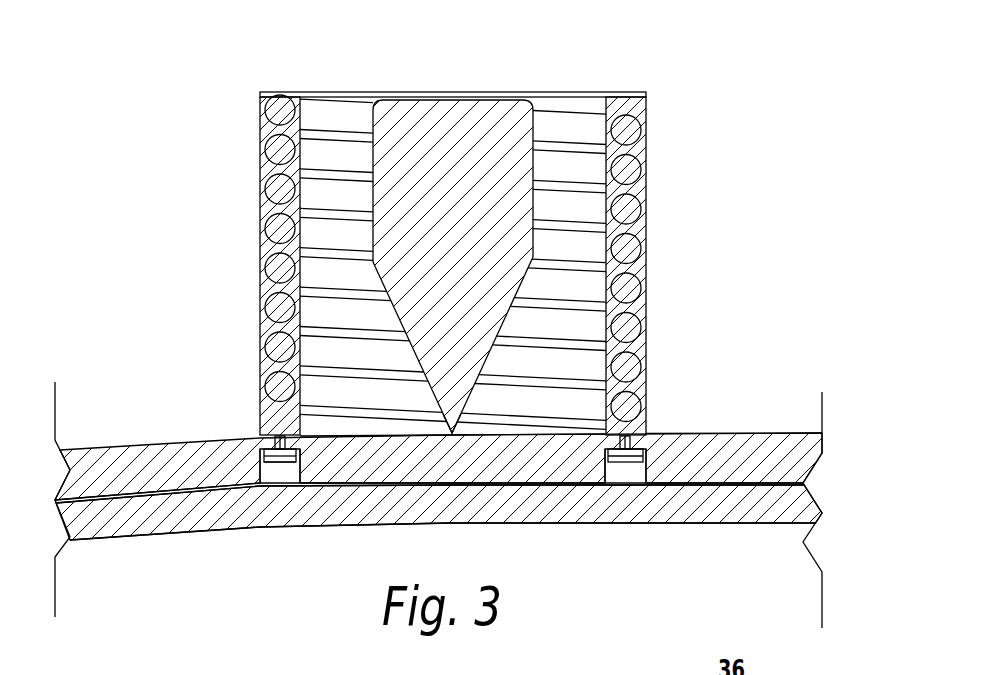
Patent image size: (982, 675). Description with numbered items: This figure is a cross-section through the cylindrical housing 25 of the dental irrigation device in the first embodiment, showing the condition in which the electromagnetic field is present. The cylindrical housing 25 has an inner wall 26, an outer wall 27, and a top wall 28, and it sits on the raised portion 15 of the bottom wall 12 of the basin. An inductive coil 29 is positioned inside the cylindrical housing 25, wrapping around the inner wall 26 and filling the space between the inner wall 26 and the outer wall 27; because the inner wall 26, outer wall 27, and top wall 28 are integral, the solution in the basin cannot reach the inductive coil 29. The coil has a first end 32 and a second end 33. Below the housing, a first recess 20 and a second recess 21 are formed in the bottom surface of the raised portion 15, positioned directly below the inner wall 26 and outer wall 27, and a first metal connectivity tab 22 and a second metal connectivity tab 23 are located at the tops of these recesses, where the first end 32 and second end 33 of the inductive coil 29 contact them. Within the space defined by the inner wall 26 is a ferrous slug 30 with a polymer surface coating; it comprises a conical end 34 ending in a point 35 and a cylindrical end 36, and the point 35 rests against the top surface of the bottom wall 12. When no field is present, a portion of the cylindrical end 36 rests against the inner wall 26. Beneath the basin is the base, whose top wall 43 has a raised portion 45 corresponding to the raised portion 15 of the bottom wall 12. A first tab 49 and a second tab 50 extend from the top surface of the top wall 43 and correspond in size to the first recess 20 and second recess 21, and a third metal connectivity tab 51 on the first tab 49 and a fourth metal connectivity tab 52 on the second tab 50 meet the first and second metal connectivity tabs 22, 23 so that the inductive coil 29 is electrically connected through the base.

The bottom wall 12 is at (768, 433).
The raised portion 15 is at (703, 432).
The first recess 20 is at (252, 467).
The second recess 21 is at (640, 458).
The first metal connectivity tab 22 is at (268, 462).
The second metal connectivity tab 23 is at (607, 480).
The cylindrical housing 25 is at (262, 240).
The inner wall 26 is at (578, 103).
The outer wall 27 is at (648, 190).
The top wall 28 is at (622, 93).
The inductive coil 29 is at (578, 245).
The ferrous slug 30 is at (438, 99).
The first end 32 is at (272, 437).
The second end 33 is at (598, 450).
The conical end 34 is at (510, 302).
The point 35 is at (458, 428).
The cylindrical end 36 is at (533, 104).
The top wall 43 is at (768, 523).
The raised portion 45 is at (685, 523).
The first tab 49 is at (266, 475).
The second tab 50 is at (645, 466).
The third metal connectivity tab 51 is at (283, 466).
The fourth metal connectivity tab 52 is at (630, 458).